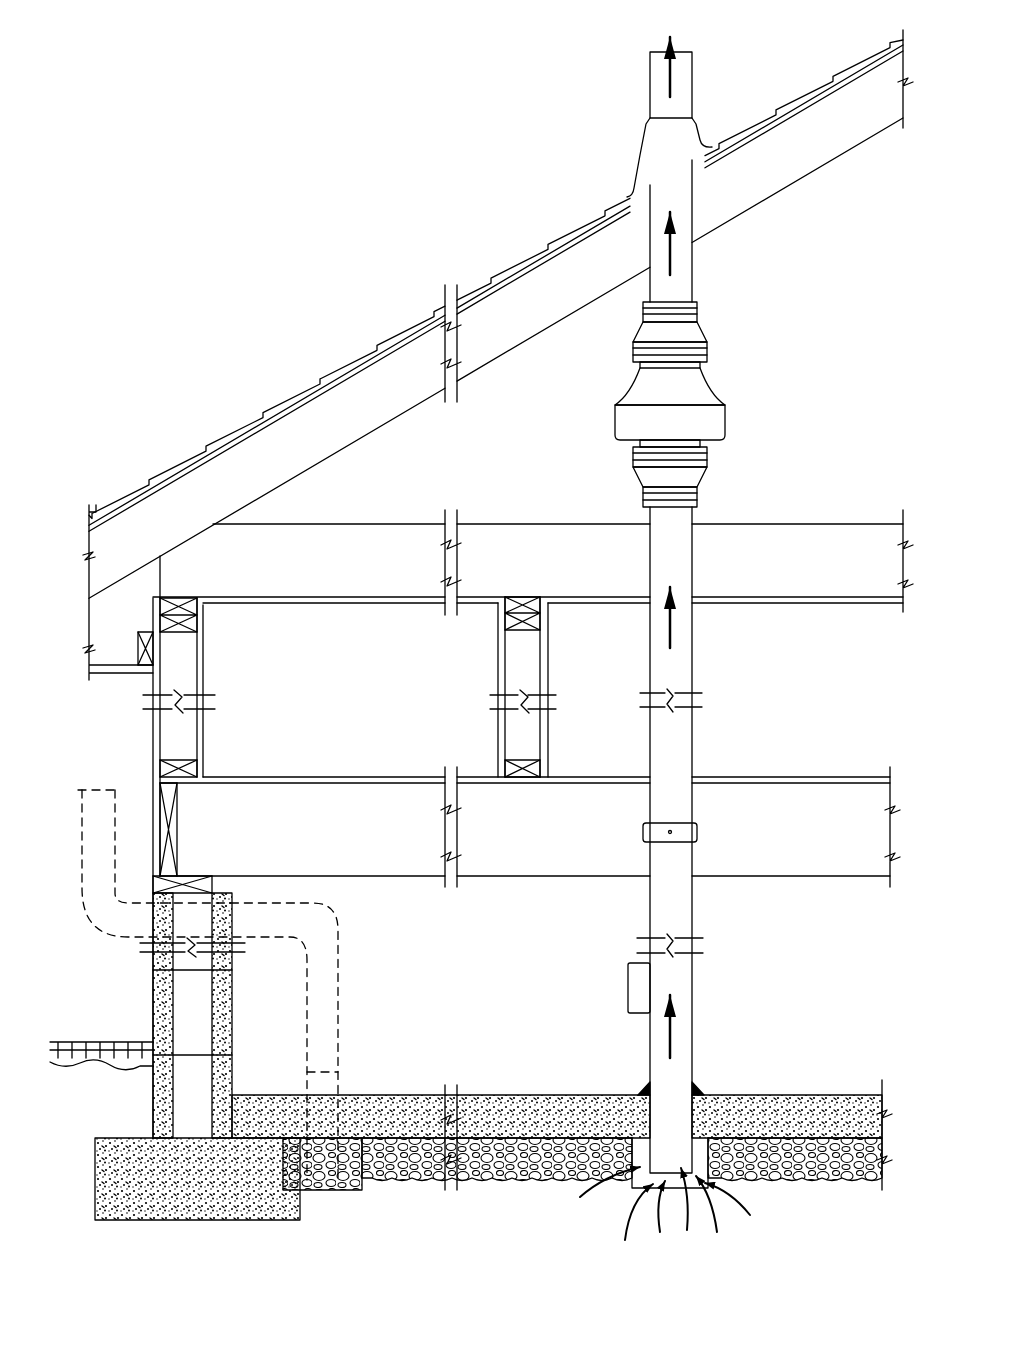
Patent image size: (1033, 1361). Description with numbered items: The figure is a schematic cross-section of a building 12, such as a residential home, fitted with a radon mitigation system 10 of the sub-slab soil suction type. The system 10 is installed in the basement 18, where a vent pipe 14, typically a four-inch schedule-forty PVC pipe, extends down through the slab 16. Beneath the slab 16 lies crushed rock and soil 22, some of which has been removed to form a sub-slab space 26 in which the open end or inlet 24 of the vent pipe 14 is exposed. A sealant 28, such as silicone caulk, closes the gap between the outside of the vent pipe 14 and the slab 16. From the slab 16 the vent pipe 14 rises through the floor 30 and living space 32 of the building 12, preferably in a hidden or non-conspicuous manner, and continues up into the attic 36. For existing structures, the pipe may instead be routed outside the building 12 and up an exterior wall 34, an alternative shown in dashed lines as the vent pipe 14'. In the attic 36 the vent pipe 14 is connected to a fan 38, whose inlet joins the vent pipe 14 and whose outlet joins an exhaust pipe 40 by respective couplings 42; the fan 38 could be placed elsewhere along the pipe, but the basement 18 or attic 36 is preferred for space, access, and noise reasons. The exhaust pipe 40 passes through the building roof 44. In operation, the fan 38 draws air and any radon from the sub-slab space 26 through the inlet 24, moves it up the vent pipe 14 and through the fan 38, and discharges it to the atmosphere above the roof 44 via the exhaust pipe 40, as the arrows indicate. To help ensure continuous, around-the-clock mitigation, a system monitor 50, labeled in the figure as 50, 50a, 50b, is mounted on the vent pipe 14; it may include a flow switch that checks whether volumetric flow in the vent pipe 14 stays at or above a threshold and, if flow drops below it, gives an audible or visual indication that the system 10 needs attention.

The radon mitigation system 10 is at (766, 841).
The building 12 is at (253, 377).
The vent pipe 14 is at (636, 605).
The vent pipe routed outside the building 14' is at (228, 985).
The slab 16 is at (397, 1110).
The basement 18 is at (450, 976).
The crushed rock and soil 22 is at (570, 1118).
The open end or inlet 24 is at (706, 1195).
The sub-slab space 26 is at (658, 1195).
The sealant 28 is at (702, 1086).
The floor 30 is at (492, 842).
The living space 32 is at (290, 682).
The exterior wall 34 is at (160, 996).
The attic 36 is at (537, 421).
The fan 38 is at (705, 424).
The exhaust pipe 40 is at (675, 199).
The couplings 42 is at (633, 344).
The building roof 44 is at (525, 297).
The system monitor 50 is at (637, 973).
The sensor 50a is at (639, 988).
The indicator 50b is at (639, 988).